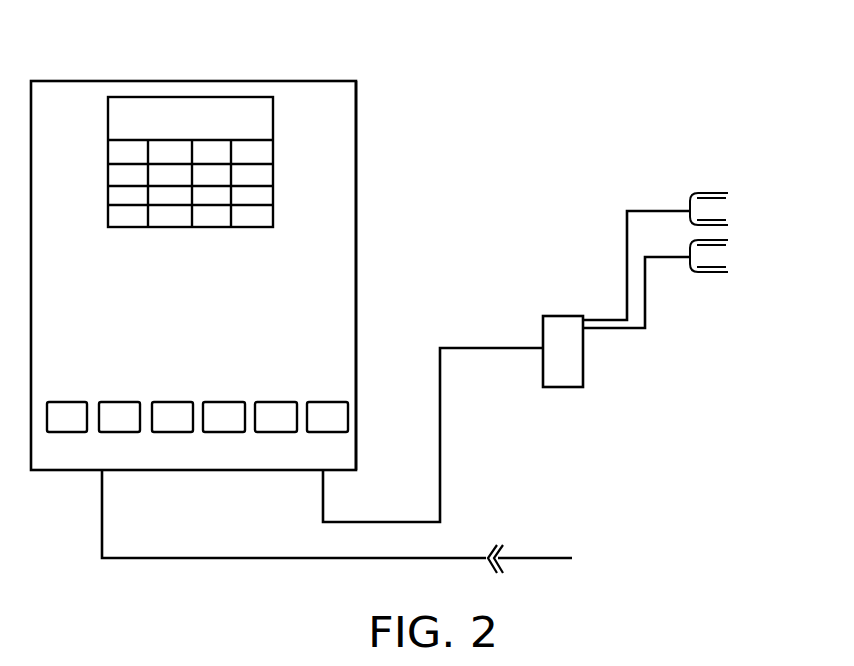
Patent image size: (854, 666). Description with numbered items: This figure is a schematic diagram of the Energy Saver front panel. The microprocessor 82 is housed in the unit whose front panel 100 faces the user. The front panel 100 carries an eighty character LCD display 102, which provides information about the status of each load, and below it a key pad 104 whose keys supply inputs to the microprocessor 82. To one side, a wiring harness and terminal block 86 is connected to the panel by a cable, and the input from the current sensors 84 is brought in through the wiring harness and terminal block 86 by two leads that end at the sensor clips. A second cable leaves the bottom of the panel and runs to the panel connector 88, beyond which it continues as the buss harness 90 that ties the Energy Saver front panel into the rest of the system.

The microprocessor 82 is at (378, 128).
The front panel 100 is at (358, 264).
The LCD display 102 is at (214, 97).
The key pad 104 is at (186, 228).
The wiring harness and terminal block 86 is at (583, 368).
The current sensors 84 is at (730, 220).
The panel connector 88 is at (493, 543).
The buss harness 90 is at (550, 556).